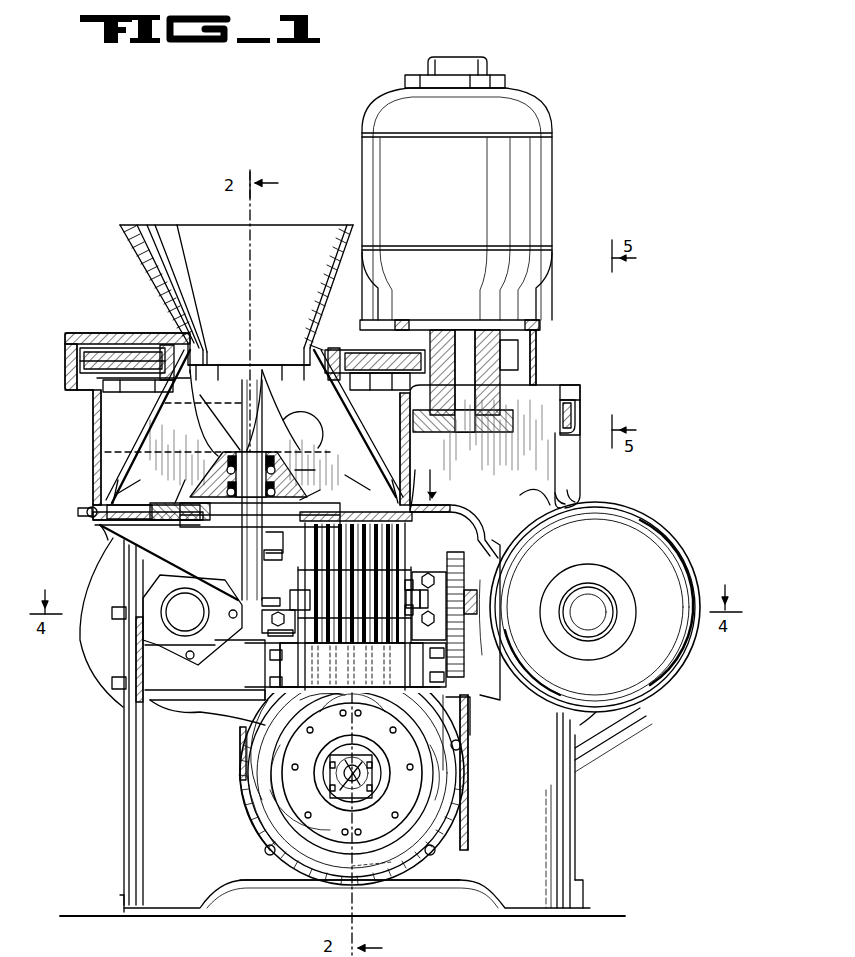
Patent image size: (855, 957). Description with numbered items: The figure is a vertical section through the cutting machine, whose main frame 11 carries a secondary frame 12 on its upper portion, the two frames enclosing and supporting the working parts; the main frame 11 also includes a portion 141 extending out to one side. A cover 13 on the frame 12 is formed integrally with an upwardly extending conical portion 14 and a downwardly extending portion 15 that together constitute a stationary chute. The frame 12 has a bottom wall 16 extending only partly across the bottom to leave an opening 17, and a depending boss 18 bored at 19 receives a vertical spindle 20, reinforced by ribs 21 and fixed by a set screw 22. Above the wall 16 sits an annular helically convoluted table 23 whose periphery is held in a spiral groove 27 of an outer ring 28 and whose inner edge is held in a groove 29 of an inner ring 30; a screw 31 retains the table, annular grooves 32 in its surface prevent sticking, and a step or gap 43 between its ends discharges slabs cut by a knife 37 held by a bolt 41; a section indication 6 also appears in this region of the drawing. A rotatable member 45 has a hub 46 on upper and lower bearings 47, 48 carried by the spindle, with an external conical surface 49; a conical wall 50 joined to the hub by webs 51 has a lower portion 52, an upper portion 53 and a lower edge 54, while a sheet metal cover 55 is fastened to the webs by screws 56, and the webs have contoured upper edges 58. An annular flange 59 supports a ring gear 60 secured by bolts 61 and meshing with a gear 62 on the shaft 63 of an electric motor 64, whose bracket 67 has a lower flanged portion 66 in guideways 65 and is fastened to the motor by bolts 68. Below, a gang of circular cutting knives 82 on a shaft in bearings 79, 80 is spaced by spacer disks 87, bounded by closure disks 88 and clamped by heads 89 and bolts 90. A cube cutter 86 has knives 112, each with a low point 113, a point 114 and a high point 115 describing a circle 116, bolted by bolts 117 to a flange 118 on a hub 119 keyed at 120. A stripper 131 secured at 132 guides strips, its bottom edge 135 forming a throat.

The passage 6 is at (434, 478).
The main frame 11 is at (130, 796).
The secondary frame 12 is at (95, 444).
The cover 13 is at (88, 333).
The conical portion 14 is at (138, 263).
The downwardly extending portion 15 is at (206, 357).
The bottom wall 16 is at (108, 535).
The opening 17 is at (266, 555).
The depending boss 18 is at (240, 550).
The bore 19 is at (236, 573).
The spindle 20 is at (184, 526).
The ribs 21 is at (160, 520).
The set screw 22 is at (282, 558).
The annular helically convoluted table 23 is at (138, 509).
The slot or groove 27 is at (94, 517).
The ring 28 is at (95, 500).
The slot or groove 29 is at (179, 489).
The ring 30 is at (145, 536).
The screw or bolt 31 is at (88, 510).
The annular grooves 32 is at (97, 527).
The knife 37 is at (413, 470).
The bolt 41 is at (409, 515).
The step or gap 43 is at (323, 496).
The rotatable member 45 is at (180, 433).
The hub 46 is at (224, 456).
The upper bearing 47 is at (285, 431).
The lower bearing 48 is at (274, 470).
The external conical surface 49 is at (298, 472).
The conical wall 50 is at (341, 419).
The webs or vanes 51 is at (239, 421).
The lower portion 52 is at (163, 420).
The upper portion 53 is at (190, 372).
The lower edge 54 is at (143, 447).
The sheet metal cover 55 is at (136, 478).
The screws 56 is at (138, 483).
The upper edges 58 is at (302, 424).
The annular flange 59 is at (158, 389).
The ring gear 60 is at (82, 361).
The bolts 61 is at (168, 346).
The gear 62 is at (516, 362).
The shaft 63 is at (465, 331).
The electric motor 64 is at (520, 205).
The guideways 65 is at (573, 388).
The lower flanged portion 66 is at (518, 384).
The bracket 67 is at (535, 342).
The bolts 68 is at (404, 325).
The bearing 79 is at (266, 612).
The bearing 80 is at (425, 606).
The circular cutting knives 82 is at (359, 550).
The cube cutter 86 is at (428, 800).
The spacer disks 87 is at (380, 563).
The closure disks 88 is at (421, 545).
The heads 89 is at (406, 566).
The bolts 90 is at (430, 569).
The knives 112 is at (296, 820).
The low point 113 is at (245, 777).
The point 114 is at (254, 782).
The high point 115 is at (346, 885).
The circle 116 is at (469, 761).
The bolts 117 is at (307, 731).
The flange 118 is at (382, 716).
The hub 119 is at (348, 760).
The key 120 is at (333, 765).
The stripper 131 is at (280, 657).
The securing point 132 is at (456, 690).
The bottom edge 135 is at (357, 697).
The portion 141 is at (678, 556).